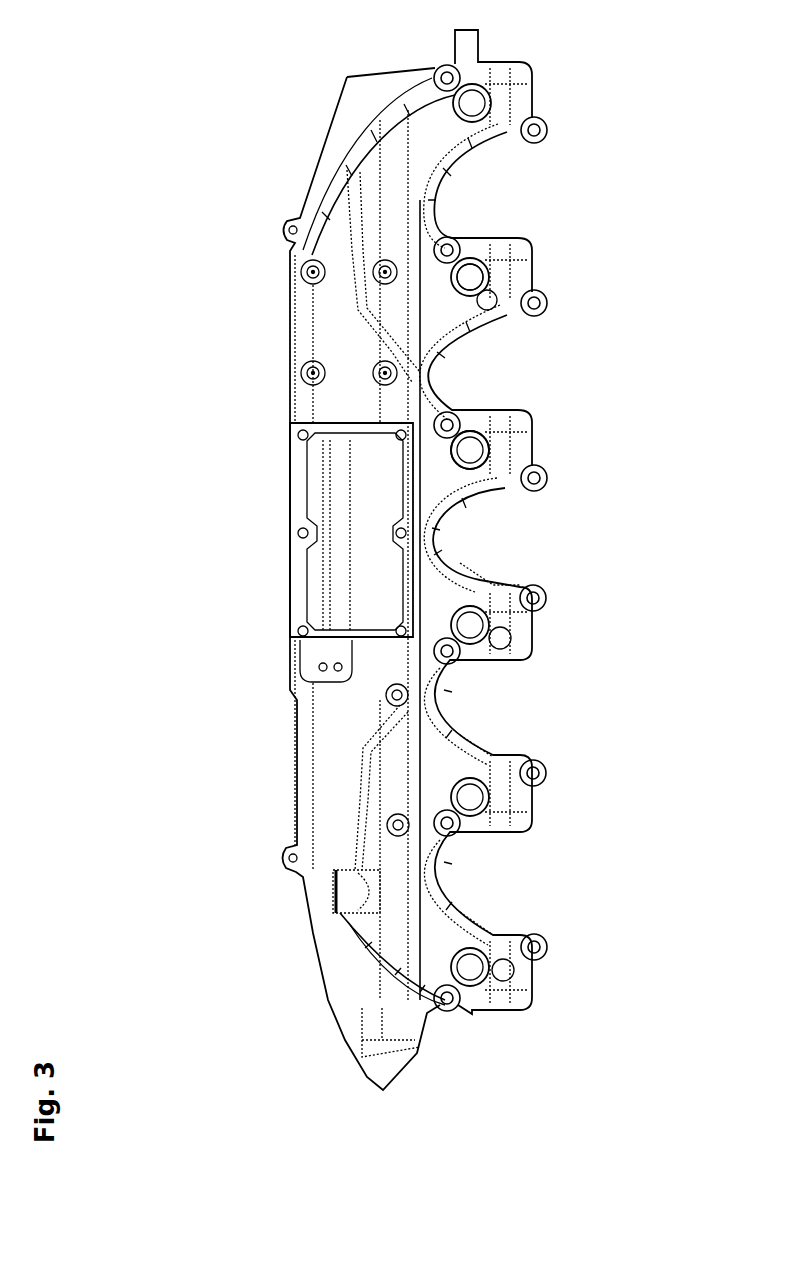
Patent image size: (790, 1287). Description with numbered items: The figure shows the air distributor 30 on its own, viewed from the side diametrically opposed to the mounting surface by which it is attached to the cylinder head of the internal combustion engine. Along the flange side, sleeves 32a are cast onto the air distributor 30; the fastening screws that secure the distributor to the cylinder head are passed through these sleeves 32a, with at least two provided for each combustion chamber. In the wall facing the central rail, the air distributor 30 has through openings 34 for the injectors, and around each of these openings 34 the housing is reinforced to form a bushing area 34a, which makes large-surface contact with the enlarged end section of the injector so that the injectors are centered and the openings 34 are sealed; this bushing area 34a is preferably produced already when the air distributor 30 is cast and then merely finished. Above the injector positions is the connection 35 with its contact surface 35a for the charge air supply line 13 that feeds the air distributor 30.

The air distributor 30 is at (270, 981).
The connection 35 is at (265, 588).
The contact surface 35a is at (298, 493).
The charge air supply line 13 is at (364, 526).
The through openings 34 is at (475, 277).
The bushing area 34a is at (503, 449).
The sleeves 32a is at (460, 845).